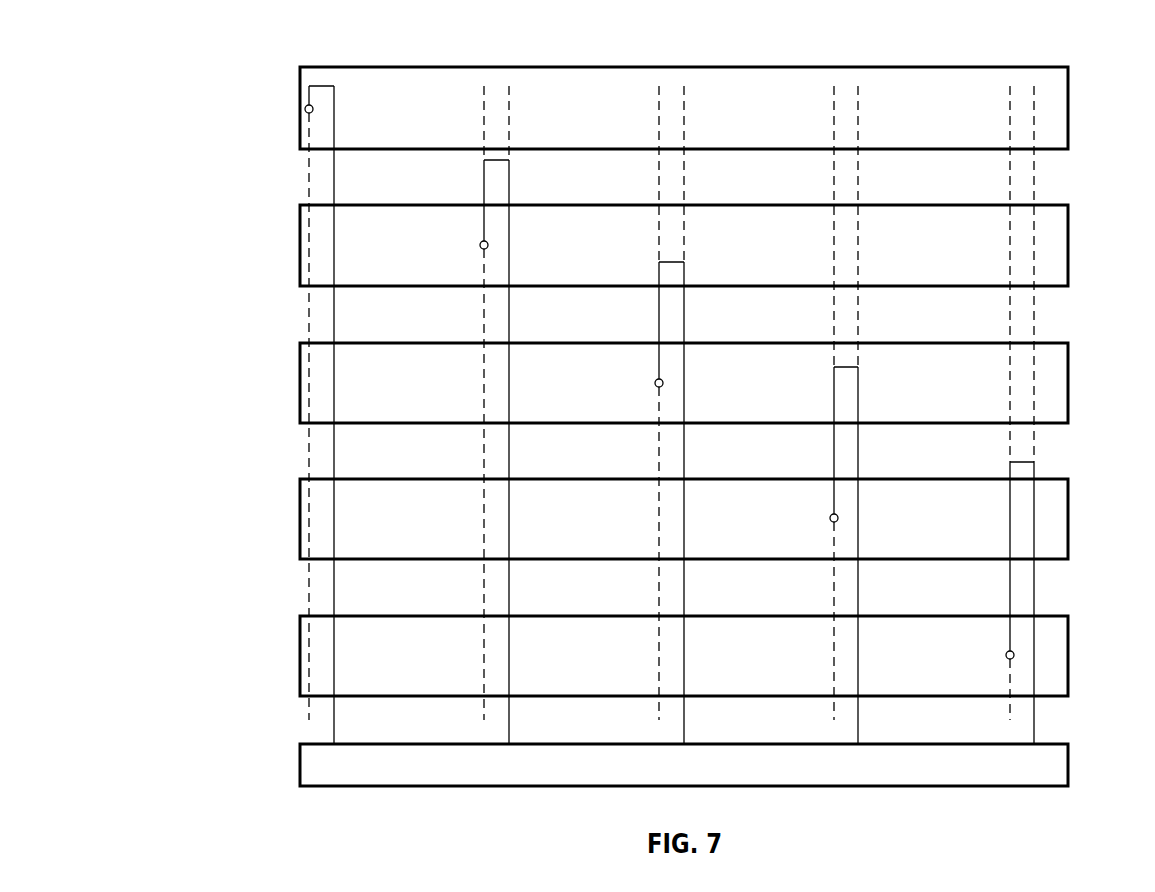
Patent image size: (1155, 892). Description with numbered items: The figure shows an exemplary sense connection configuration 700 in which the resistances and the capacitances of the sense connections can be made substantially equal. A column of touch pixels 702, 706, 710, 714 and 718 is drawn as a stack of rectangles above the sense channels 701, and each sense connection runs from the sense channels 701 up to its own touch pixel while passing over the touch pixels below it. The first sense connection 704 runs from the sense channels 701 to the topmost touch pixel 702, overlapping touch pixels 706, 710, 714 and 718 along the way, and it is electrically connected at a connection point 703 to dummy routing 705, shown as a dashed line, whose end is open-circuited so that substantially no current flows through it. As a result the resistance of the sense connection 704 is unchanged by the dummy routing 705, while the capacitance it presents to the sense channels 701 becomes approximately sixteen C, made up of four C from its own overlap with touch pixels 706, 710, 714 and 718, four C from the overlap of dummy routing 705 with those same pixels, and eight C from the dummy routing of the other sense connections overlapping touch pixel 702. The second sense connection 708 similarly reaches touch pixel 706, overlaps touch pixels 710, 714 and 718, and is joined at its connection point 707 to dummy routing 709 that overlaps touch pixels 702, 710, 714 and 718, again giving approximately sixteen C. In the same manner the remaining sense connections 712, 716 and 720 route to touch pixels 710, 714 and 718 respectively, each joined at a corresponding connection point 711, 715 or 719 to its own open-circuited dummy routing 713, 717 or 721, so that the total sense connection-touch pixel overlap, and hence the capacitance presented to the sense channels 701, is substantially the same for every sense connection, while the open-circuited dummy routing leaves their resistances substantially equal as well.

The sense connection configuration 700 is at (167, 37).
The sense channels 701 is at (1069, 765).
The touch pixel 702 is at (1069, 108).
The connection point 703 is at (305, 107).
The sense connection 704 is at (334, 185).
The dummy routing 705 is at (307, 462).
The touch pixel 706 is at (1069, 245).
The second contact 707 is at (481, 243).
The sense connection 708 is at (509, 328).
The dummy routing 709 is at (509, 121).
The touch pixel 710 is at (1069, 382).
The third contact 711 is at (656, 380).
The third via 712 is at (684, 470).
The third dummy via 713 is at (684, 121).
The touch pixel 714 is at (1069, 518).
The fourth contact 715 is at (831, 515).
The fourth via 716 is at (859, 602).
The fourth dummy via 717 is at (859, 190).
The touch pixel 718 is at (1069, 655).
The fifth contact 719 is at (1007, 652).
The fifth via 720 is at (1034, 730).
The fifth dummy via 721 is at (1034, 185).